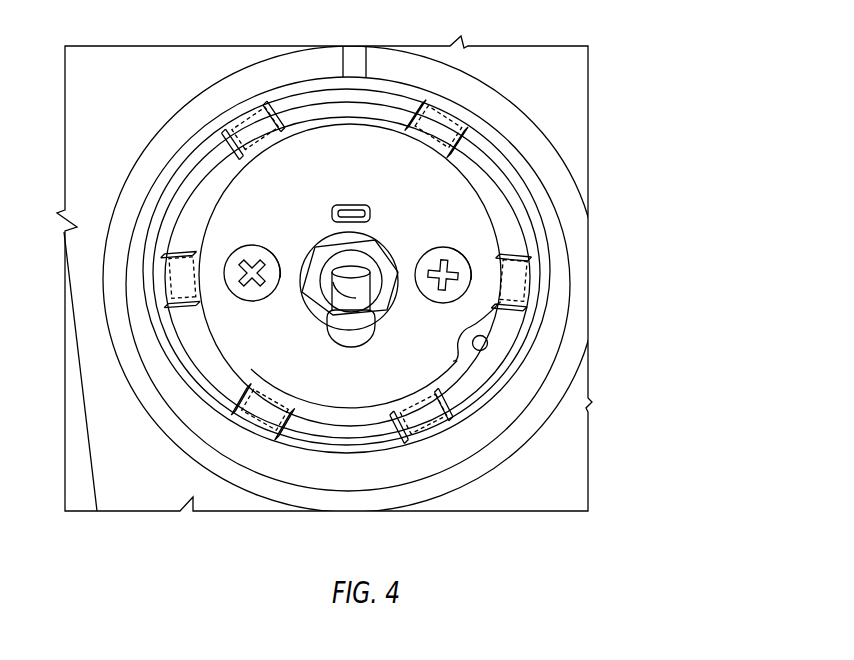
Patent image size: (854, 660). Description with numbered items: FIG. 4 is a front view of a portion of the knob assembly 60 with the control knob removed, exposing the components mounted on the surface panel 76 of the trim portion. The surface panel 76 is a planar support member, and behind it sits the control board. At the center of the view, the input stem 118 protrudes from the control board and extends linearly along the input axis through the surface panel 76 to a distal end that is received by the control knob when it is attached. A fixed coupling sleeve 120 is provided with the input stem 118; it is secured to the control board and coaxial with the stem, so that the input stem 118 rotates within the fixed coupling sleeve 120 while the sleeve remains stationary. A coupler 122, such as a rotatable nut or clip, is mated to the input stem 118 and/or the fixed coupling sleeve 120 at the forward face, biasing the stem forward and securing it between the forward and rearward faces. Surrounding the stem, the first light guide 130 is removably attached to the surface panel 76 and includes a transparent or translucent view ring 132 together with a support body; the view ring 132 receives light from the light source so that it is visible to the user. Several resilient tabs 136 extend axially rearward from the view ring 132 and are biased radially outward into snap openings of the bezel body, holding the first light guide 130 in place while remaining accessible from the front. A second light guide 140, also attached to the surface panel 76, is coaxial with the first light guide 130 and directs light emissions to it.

The knob assembly 60 is at (147, 135).
The surface panel 76 is at (570, 107).
The input stem 118 is at (323, 287).
The fixed coupling sleeve 120 is at (348, 258).
The coupler 122 is at (392, 274).
The first light guide 130 is at (555, 190).
The view ring 132 is at (438, 271).
The resilient tabs 136 is at (180, 398).
The second light guide 140 is at (468, 360).